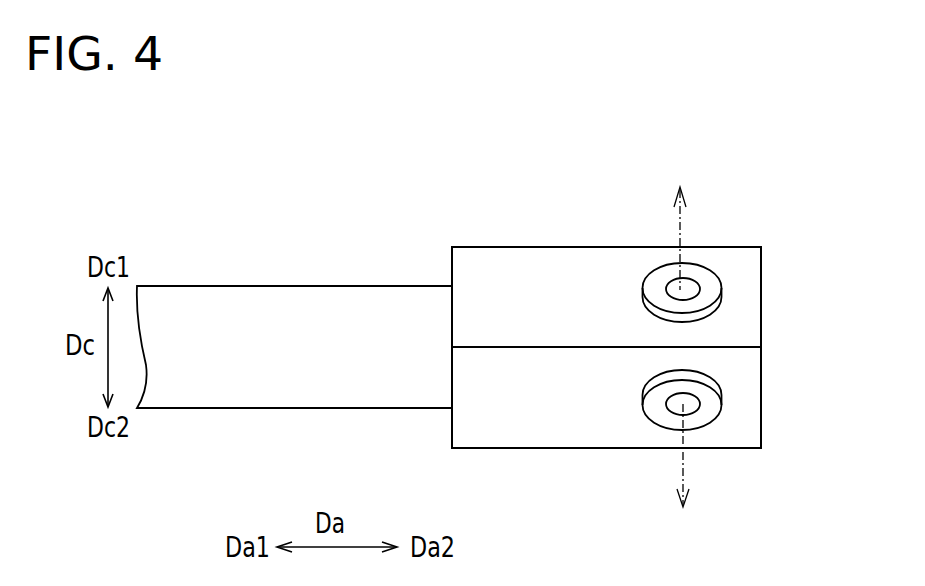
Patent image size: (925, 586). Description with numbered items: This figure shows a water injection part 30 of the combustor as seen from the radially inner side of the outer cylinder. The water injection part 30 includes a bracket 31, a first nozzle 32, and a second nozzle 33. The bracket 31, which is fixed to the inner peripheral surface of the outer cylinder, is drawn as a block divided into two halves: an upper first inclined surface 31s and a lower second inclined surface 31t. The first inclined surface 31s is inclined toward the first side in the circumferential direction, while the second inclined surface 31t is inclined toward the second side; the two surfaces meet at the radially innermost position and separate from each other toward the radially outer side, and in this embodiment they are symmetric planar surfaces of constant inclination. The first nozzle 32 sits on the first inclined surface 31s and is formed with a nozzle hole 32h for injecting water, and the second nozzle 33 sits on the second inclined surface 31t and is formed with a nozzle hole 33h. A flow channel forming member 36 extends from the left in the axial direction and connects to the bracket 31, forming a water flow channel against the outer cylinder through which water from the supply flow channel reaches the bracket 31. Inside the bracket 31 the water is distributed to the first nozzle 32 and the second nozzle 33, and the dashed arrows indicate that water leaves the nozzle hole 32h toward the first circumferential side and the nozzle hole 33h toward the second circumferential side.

The water injection part 30 is at (471, 230).
The bracket 31 is at (750, 246).
The first inclined surface 31s is at (748, 284).
The second inclined surface 31t is at (748, 385).
The first nozzle 32 is at (655, 266).
The nozzle hole 32h is at (687, 296).
The second nozzle 33 is at (652, 421).
The nozzle hole 33h is at (684, 410).
The flow channel forming member 36 is at (290, 286).